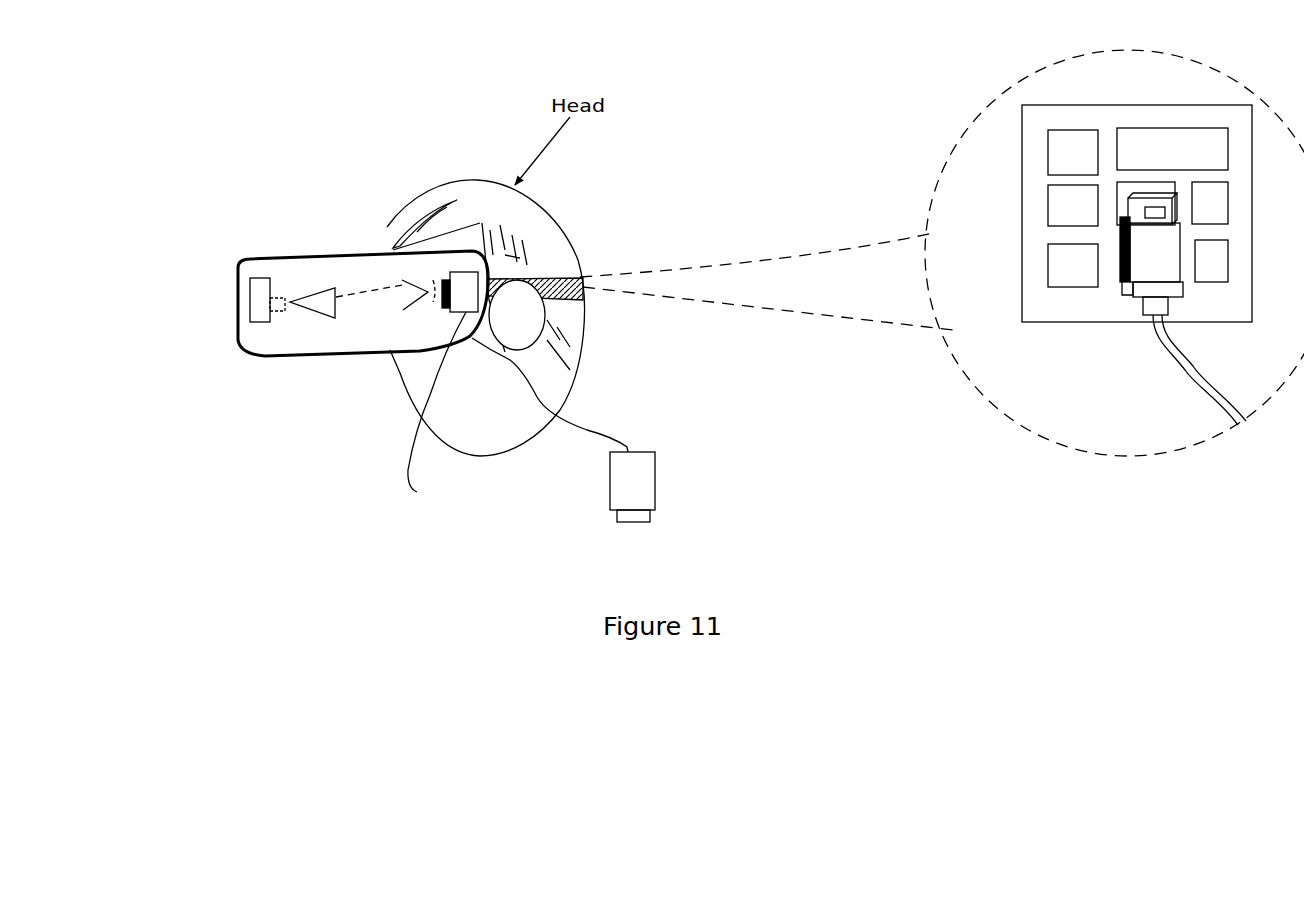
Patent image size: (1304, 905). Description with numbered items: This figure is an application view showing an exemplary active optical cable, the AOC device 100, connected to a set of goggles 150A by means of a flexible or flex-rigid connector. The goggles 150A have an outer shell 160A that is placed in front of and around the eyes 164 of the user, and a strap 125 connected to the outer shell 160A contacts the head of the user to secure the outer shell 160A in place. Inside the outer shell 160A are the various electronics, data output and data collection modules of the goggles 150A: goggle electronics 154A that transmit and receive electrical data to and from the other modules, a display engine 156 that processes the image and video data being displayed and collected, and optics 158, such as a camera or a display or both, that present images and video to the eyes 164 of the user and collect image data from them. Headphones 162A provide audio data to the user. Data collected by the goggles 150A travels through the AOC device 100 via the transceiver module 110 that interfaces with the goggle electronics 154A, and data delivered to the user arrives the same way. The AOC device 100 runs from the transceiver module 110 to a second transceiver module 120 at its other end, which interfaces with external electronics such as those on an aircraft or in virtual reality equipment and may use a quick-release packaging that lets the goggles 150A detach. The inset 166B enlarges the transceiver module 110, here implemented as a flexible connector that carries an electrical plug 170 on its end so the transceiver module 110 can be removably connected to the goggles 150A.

The optics 158 is at (347, 292).
The goggle electronics 154A is at (260, 280).
The outer shell 160A is at (237, 340).
The display engine 156 is at (305, 308).
The eyes 164 is at (403, 305).
The goggles 150A is at (403, 185).
The strap 125 is at (580, 278).
The headphones 162A is at (543, 313).
The transceiver module 110 is at (500, 320).
The active optical cable 100 is at (577, 437).
The transceiver module 120 is at (658, 487).
The electrical plug 170 is at (1120, 263).
The inset 166B is at (1185, 453).